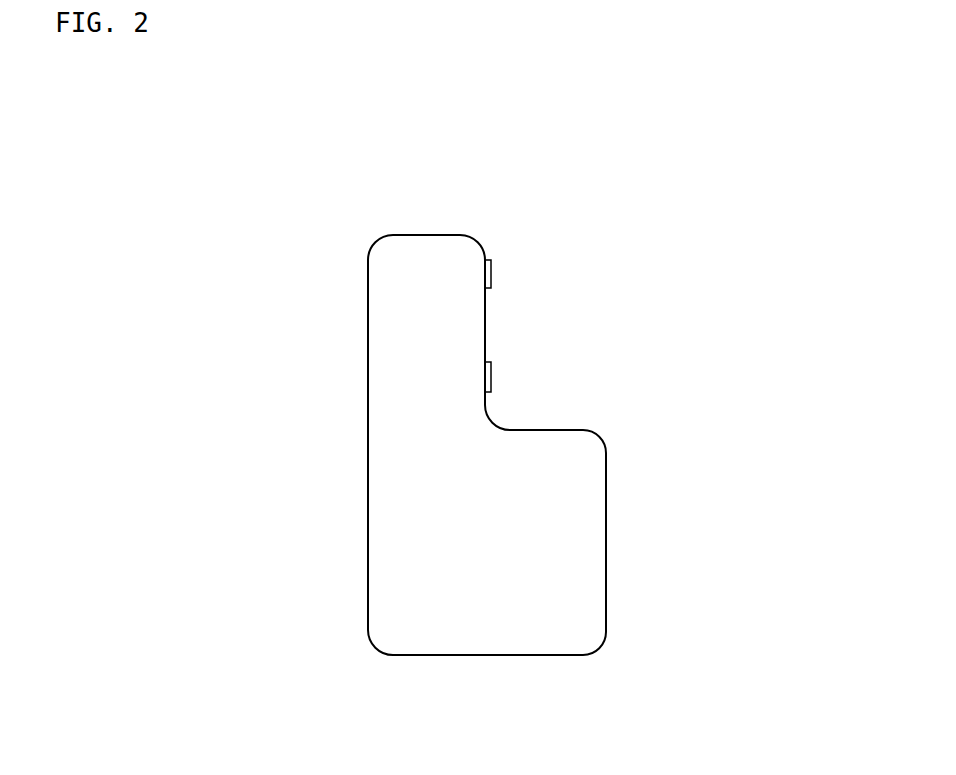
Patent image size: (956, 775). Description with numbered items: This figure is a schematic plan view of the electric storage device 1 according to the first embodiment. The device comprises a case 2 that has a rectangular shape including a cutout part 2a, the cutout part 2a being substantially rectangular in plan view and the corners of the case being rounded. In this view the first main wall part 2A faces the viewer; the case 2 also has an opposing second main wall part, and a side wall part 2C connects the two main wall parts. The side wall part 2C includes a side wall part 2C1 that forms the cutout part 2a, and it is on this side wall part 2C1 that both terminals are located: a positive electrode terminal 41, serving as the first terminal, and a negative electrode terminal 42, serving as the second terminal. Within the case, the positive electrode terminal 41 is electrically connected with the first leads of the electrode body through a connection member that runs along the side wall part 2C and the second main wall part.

The electric storage device 1 is at (544, 194).
The case 2 is at (605, 514).
The first main wall part 2A is at (405, 392).
The side wall part 2C is at (486, 330).
The side wall part forming the cutout part 2C1 is at (486, 342).
The cutout part 2a is at (568, 427).
The positive electrode terminal 41 is at (490, 375).
The negative electrode terminal 42 is at (492, 274).